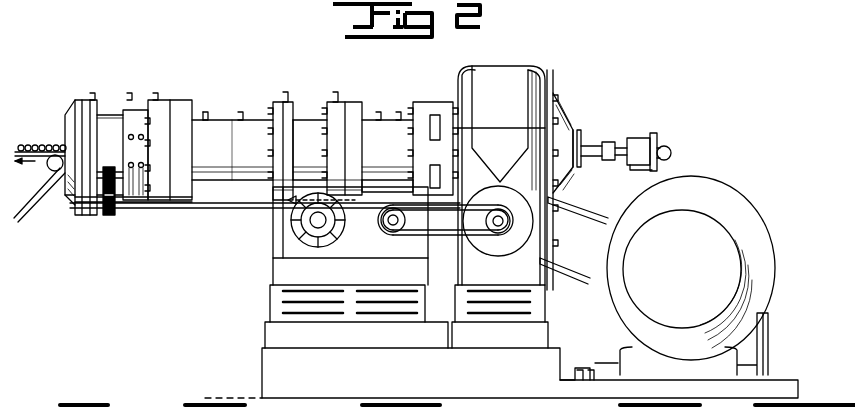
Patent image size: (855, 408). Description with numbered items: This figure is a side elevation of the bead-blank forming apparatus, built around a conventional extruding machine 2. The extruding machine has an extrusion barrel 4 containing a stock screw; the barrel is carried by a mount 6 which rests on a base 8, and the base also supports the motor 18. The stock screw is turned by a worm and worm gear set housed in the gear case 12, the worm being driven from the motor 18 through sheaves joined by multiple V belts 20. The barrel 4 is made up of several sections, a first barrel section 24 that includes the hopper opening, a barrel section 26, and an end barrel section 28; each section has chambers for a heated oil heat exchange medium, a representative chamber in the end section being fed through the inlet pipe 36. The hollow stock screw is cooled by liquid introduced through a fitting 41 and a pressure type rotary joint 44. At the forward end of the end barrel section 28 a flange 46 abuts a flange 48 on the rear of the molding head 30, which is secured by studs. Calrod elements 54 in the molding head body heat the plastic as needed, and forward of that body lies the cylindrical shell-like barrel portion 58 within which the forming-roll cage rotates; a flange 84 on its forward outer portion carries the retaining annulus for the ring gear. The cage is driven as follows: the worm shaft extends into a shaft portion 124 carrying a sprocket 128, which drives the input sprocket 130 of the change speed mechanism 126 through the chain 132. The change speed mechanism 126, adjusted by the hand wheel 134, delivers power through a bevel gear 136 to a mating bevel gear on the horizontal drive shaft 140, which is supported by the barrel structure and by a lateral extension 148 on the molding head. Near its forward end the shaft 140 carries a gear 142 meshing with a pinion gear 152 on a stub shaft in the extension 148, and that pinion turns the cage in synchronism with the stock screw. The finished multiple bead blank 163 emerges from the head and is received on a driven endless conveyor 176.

The extruding machine 2 is at (572, 101).
The extrusion barrel 4 is at (312, 98).
The mount 6 is at (275, 250).
The base 8 is at (268, 363).
The gear case 12 is at (537, 82).
The motor 18 is at (737, 208).
The multiple V belts 20 is at (587, 214).
The barrel section 24 is at (385, 135).
The barrel section 26 is at (300, 130).
The barrel section 28 is at (232, 135).
The molding head 30 is at (114, 105).
The inlet pipe 36 is at (205, 118).
The fitting 41 is at (671, 153).
The pressure type rotary joint 44 is at (640, 138).
The flange 46 is at (178, 112).
The flange 48 is at (160, 115).
The Calrod elements 54 is at (150, 112).
The barrel portion 58 is at (108, 105).
The flange 84 is at (90, 100).
The shaft portion 124 is at (504, 236).
The change speed mechanism 126 is at (380, 245).
The sprocket 128 is at (493, 237).
The input sprocket 130 is at (393, 236).
The chain 132 is at (455, 234).
The hand wheel 134 is at (318, 245).
The bevel gear 136 is at (334, 201).
The horizontal drive shaft 140 is at (216, 209).
The gear 142 is at (108, 216).
The lateral extension 148 is at (78, 215).
The pinion gear 152 is at (74, 205).
The multiple bead blank 163 is at (45, 145).
The driven endless conveyor 176 is at (38, 202).